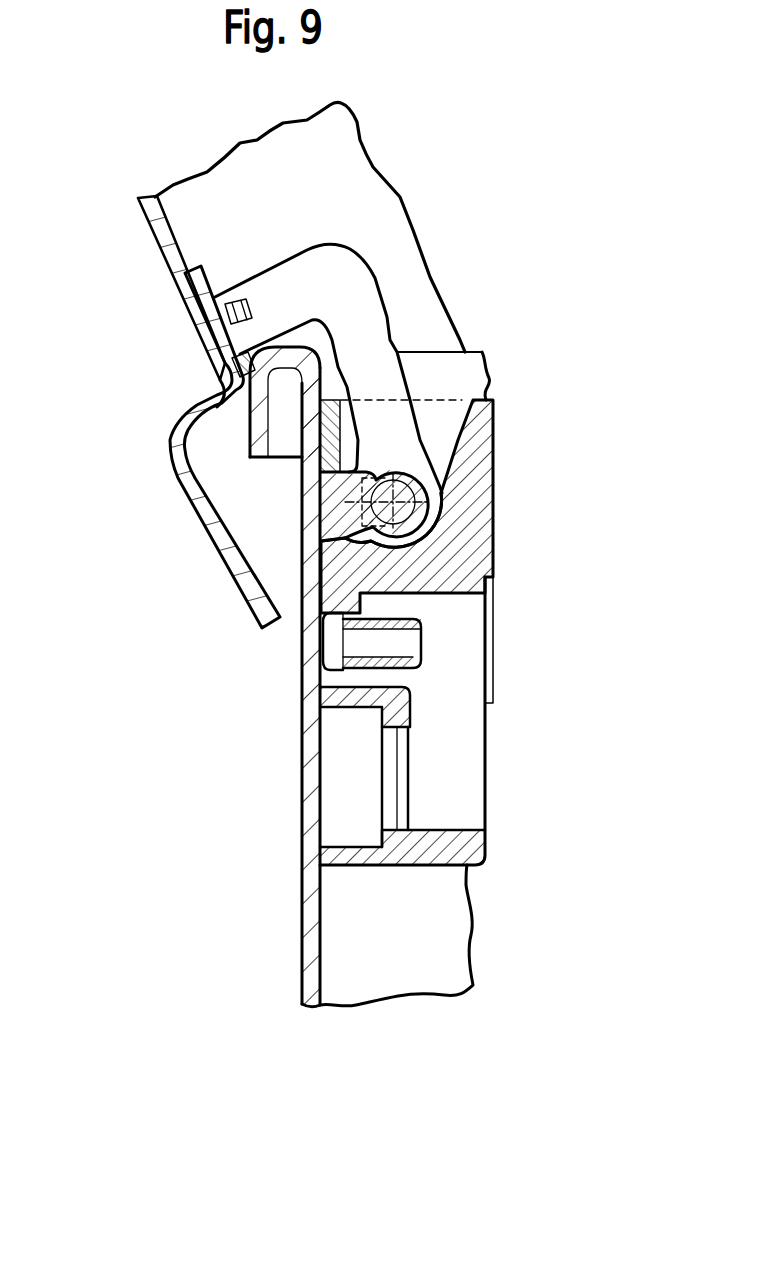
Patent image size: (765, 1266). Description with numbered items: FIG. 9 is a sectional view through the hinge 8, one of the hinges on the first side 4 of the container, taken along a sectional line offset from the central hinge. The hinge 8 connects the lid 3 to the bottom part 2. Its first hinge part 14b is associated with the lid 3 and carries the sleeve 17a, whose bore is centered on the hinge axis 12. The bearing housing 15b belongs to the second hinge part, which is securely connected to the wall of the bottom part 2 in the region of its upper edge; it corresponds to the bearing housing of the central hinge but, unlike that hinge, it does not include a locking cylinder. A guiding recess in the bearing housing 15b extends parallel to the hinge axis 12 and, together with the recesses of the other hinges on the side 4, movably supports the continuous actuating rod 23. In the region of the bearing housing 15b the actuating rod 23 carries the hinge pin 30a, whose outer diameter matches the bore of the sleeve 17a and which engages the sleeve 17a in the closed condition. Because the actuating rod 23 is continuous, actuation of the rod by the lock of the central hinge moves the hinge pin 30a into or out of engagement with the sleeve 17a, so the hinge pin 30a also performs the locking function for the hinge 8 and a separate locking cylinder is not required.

The bottom part 2 is at (307, 980).
The lid 3 is at (148, 209).
The side 4 is at (173, 515).
The hinge 8 is at (503, 368).
The hinge axis 12 is at (455, 539).
The lever 14b is at (383, 280).
The bearing housing 15b is at (487, 558).
The sleeve 17a is at (440, 493).
The actuating rod 23 is at (327, 596).
The hinge pin 30a is at (431, 492).